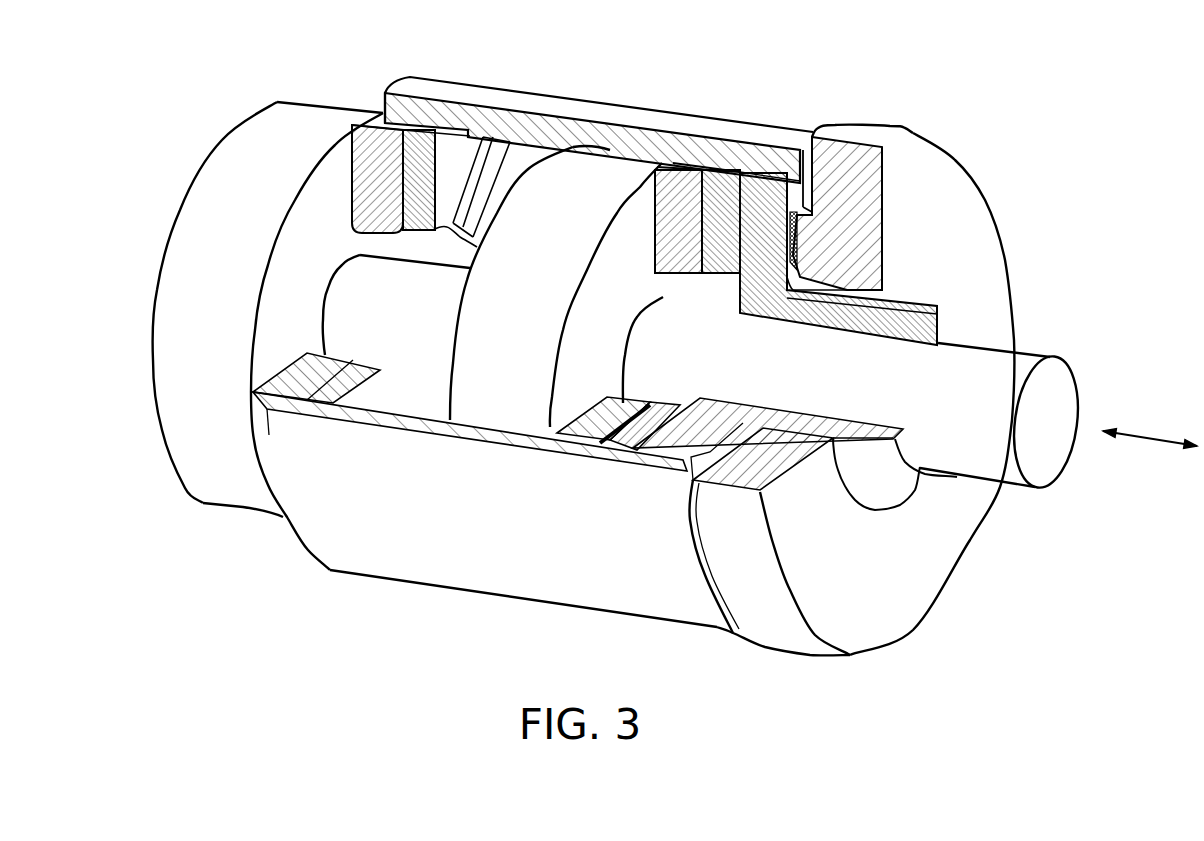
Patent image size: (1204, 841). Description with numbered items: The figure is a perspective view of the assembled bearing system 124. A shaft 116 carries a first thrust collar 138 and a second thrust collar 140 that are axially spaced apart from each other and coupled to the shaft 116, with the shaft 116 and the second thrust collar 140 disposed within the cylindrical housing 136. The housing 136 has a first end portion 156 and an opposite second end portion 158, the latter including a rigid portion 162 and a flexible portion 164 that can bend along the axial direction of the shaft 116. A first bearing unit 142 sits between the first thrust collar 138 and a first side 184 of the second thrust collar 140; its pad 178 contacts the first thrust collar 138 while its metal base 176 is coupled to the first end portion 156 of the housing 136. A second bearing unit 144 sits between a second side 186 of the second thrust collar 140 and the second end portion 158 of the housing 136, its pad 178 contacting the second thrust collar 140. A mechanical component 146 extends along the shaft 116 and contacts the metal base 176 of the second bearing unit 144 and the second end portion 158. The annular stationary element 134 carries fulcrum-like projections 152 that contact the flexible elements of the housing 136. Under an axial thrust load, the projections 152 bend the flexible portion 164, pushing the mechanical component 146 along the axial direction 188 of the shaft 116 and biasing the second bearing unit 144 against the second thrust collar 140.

The shaft 116 is at (1023, 360).
The bearing system 124 is at (1012, 53).
The stationary element 134 is at (907, 650).
The housing 136 is at (622, 90).
The first thrust collar 138 is at (230, 160).
The second thrust collar 140 is at (560, 173).
The first bearing unit 142 is at (395, 158).
The second bearing unit 144 is at (703, 293).
The mechanical component 146 is at (927, 490).
The projections 152 is at (800, 253).
The first end portion 156 is at (385, 92).
The second end portion 158 is at (803, 140).
The rigid portion 162 is at (773, 168).
The flexible portion 164 is at (830, 200).
The metal base 176 is at (440, 128).
The pad 178 is at (363, 180).
The first side 184 is at (460, 307).
The second side 186 is at (580, 394).
The axial direction 188 is at (1153, 433).